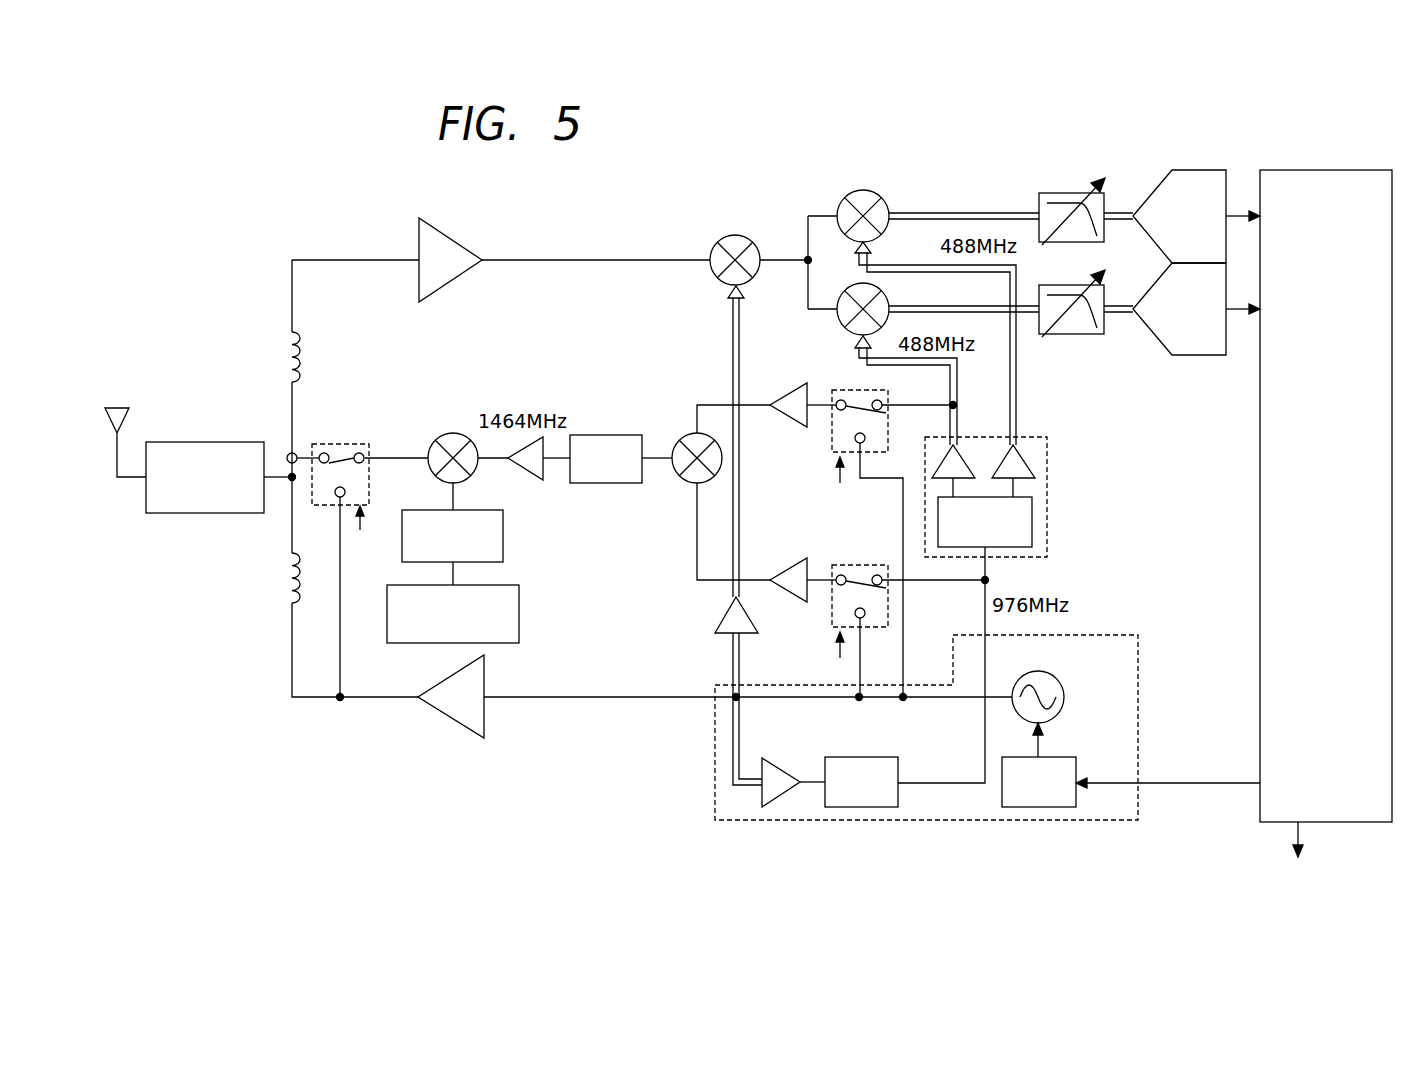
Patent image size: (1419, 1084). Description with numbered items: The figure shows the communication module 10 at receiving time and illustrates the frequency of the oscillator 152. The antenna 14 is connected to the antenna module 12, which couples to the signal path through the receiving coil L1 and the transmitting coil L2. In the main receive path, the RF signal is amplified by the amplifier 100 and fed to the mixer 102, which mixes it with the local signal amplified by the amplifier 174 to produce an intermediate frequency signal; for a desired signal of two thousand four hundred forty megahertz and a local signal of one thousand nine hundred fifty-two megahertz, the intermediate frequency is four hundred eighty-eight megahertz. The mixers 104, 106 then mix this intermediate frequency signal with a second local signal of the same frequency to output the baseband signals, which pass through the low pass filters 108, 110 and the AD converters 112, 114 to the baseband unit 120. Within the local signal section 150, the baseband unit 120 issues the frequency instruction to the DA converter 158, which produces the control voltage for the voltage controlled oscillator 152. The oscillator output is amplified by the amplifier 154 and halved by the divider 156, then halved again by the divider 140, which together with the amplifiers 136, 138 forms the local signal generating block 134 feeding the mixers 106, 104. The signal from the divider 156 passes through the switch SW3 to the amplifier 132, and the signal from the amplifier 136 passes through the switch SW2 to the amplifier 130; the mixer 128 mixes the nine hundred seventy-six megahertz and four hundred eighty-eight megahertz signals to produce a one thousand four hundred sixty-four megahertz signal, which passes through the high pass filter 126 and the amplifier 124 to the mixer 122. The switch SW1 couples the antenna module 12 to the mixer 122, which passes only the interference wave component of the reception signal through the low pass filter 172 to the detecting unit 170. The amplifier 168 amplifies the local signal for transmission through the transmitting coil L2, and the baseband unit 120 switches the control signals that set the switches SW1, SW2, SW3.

The communication module 10 is at (990, 174).
The antenna module 12 is at (215, 442).
The antenna 14 is at (117, 406).
The receiving coil L1 is at (282, 352).
The transmitting coil L2 is at (282, 582).
The switch SW1 is at (341, 442).
The switch SW2 is at (872, 392).
The switch SW3 is at (848, 562).
The amplifier 100 is at (452, 290).
The mixer 102 is at (736, 234).
The mixer 104 is at (864, 190).
The mixer 106 is at (889, 298).
The low pass filter 108 is at (1068, 193).
The low pass filter 110 is at (1073, 334).
The AD converter 112 is at (1195, 170).
The AD converter 114 is at (1190, 355).
The baseband unit 120 is at (1260, 521).
The mixer 122 is at (449, 433).
The amplifier 124 is at (515, 472).
The high pass filter 126 is at (608, 435).
The mixer 128 is at (684, 480).
The amplifier 130 is at (792, 418).
The amplifier 132 is at (796, 598).
The quadrature local signal generator 134 is at (1047, 467).
The amplifier 136 is at (964, 455).
The amplifier 138 is at (1024, 455).
The 2 divider 140 is at (1032, 517).
The local oscillator unit 150 is at (1138, 653).
The oscillator 152 is at (1064, 695).
The amplifier 154 is at (780, 766).
The 2 divider 156 is at (872, 757).
The DA converter 158 is at (1068, 757).
The amplifier 168 is at (458, 732).
The detecting unit 170 is at (519, 612).
The low pass filter 172 is at (503, 541).
The amplifier 174 is at (714, 610).